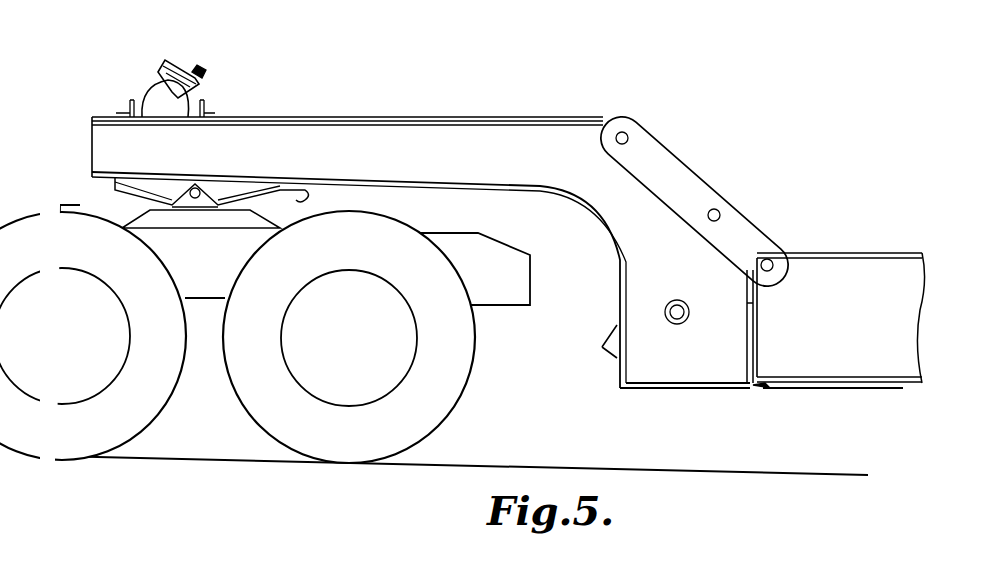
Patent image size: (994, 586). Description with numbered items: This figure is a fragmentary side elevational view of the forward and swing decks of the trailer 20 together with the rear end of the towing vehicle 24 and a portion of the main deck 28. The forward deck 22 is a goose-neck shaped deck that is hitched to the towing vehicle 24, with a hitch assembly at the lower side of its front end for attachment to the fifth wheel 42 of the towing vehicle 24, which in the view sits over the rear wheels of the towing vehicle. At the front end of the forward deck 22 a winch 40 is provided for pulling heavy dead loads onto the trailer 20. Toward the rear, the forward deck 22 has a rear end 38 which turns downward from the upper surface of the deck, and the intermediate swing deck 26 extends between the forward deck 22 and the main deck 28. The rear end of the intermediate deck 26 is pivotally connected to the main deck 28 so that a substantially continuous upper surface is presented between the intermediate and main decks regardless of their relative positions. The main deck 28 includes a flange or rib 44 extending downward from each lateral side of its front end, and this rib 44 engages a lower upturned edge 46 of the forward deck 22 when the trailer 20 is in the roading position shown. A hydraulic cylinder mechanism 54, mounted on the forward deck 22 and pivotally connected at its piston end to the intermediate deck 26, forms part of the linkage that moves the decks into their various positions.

The trailer 20 is at (783, 170).
The forward deck 22 is at (388, 127).
The towing vehicle 24 is at (175, 408).
The intermediate swing deck 26 is at (693, 172).
The main deck 28 is at (862, 252).
The rear end 38 is at (652, 376).
The winch 40 is at (170, 68).
The fifth wheel 42 is at (306, 199).
The flange or rib 44 is at (745, 381).
The lower upturned edge 46 is at (762, 389).
The hydraulic cylinder mechanism 54 is at (600, 343).